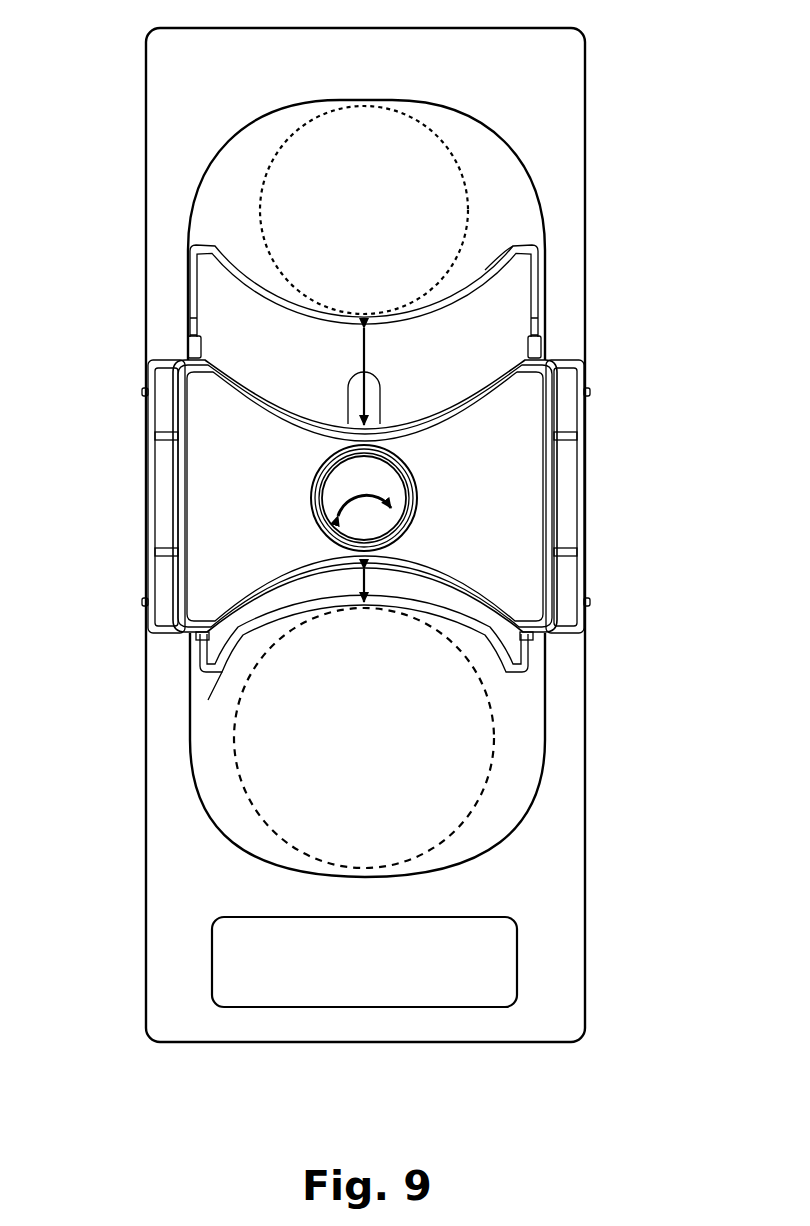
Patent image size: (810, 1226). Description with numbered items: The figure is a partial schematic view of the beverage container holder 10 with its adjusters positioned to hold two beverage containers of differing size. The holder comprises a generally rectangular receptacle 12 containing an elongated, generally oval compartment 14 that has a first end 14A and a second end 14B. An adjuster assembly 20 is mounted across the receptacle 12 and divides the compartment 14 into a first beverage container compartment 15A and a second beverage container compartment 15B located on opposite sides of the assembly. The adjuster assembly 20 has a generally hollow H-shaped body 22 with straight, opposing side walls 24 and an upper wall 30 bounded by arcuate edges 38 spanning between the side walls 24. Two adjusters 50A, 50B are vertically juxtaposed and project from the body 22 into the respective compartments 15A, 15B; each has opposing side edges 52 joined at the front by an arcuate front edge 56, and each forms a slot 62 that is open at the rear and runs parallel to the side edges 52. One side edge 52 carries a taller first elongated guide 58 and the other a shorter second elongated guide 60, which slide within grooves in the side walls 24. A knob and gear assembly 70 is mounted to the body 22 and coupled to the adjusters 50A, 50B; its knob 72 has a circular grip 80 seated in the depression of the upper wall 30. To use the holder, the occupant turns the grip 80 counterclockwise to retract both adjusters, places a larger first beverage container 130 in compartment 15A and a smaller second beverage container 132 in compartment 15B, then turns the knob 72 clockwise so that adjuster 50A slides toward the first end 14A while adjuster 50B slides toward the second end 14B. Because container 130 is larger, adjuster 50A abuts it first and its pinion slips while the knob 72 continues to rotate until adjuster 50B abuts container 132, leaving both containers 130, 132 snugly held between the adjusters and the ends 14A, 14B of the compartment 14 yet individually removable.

The beverage container holder 10 is at (735, 77).
The receptacle 12 is at (590, 885).
The compartment 14 is at (530, 800).
The first end 14A is at (273, 867).
The second end 14B is at (430, 103).
The first beverage container compartment 15A is at (223, 777).
The second beverage container compartment 15B is at (247, 184).
The adjuster assembly 20 is at (598, 458).
The body 22 is at (525, 522).
The side walls 24 is at (175, 523).
The upper wall 30 is at (220, 564).
The arcuate edges 38 is at (295, 423).
The first adjuster 50A is at (195, 673).
The second adjuster 50B is at (182, 277).
The side edges 52 is at (195, 318).
The arcuate front edge 56 is at (485, 268).
The first elongated guide 58 is at (190, 347).
The second elongated guide 60 is at (537, 343).
The slot 62 is at (380, 385).
The knob and gear assembly 70 is at (420, 469).
The knob 72 is at (416, 498).
The grip 80 is at (380, 520).
The first beverage container 130 is at (488, 746).
The second beverage container 132 is at (470, 193).